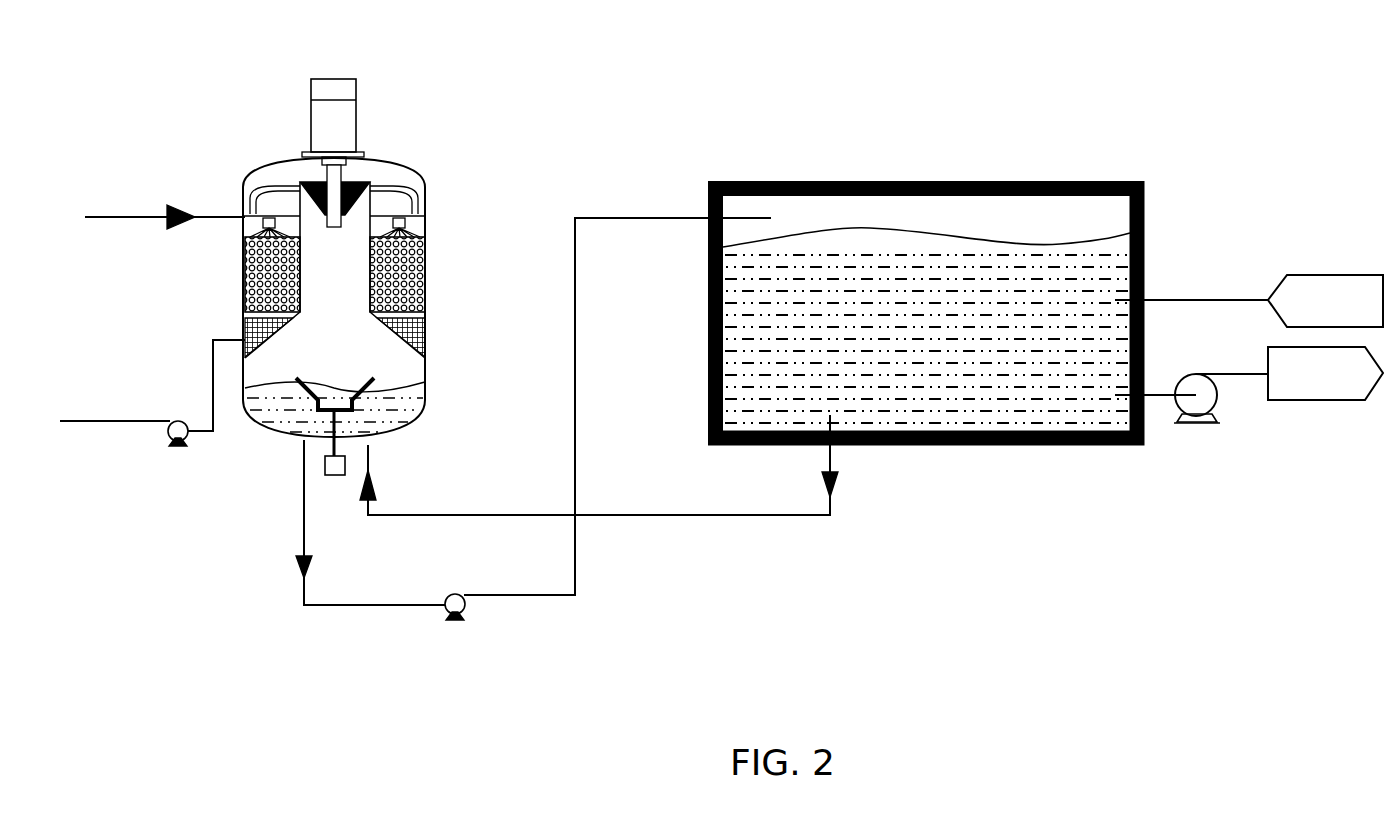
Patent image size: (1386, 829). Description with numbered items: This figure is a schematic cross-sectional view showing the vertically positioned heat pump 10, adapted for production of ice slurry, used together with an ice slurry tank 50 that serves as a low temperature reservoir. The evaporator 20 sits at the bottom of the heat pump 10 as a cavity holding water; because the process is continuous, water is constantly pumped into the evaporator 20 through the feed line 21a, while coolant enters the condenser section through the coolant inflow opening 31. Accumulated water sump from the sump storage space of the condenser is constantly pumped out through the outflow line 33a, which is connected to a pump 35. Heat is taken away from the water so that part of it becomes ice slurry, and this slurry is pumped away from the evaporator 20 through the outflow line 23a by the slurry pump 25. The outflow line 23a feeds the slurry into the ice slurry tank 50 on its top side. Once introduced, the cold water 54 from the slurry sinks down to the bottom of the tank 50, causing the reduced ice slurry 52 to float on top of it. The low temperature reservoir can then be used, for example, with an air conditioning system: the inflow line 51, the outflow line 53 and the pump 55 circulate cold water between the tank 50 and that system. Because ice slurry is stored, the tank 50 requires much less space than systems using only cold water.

The heat pump 10 is at (410, 160).
The evaporator 20 is at (425, 384).
The feed line 21a is at (430, 514).
The outflow line 23a is at (304, 522).
The slurry pump 25 is at (453, 618).
The coolant inflow opening 31 is at (135, 215).
The outflow line 33a is at (213, 380).
The pump 35 is at (178, 444).
The ice slurry tank 50 is at (1018, 148).
The inflow line 51 is at (1226, 300).
The reduced ice slurry 52 is at (1115, 263).
The outflow line 53 is at (1155, 397).
The cold water 54 is at (1012, 392).
The pump 55 is at (1196, 422).